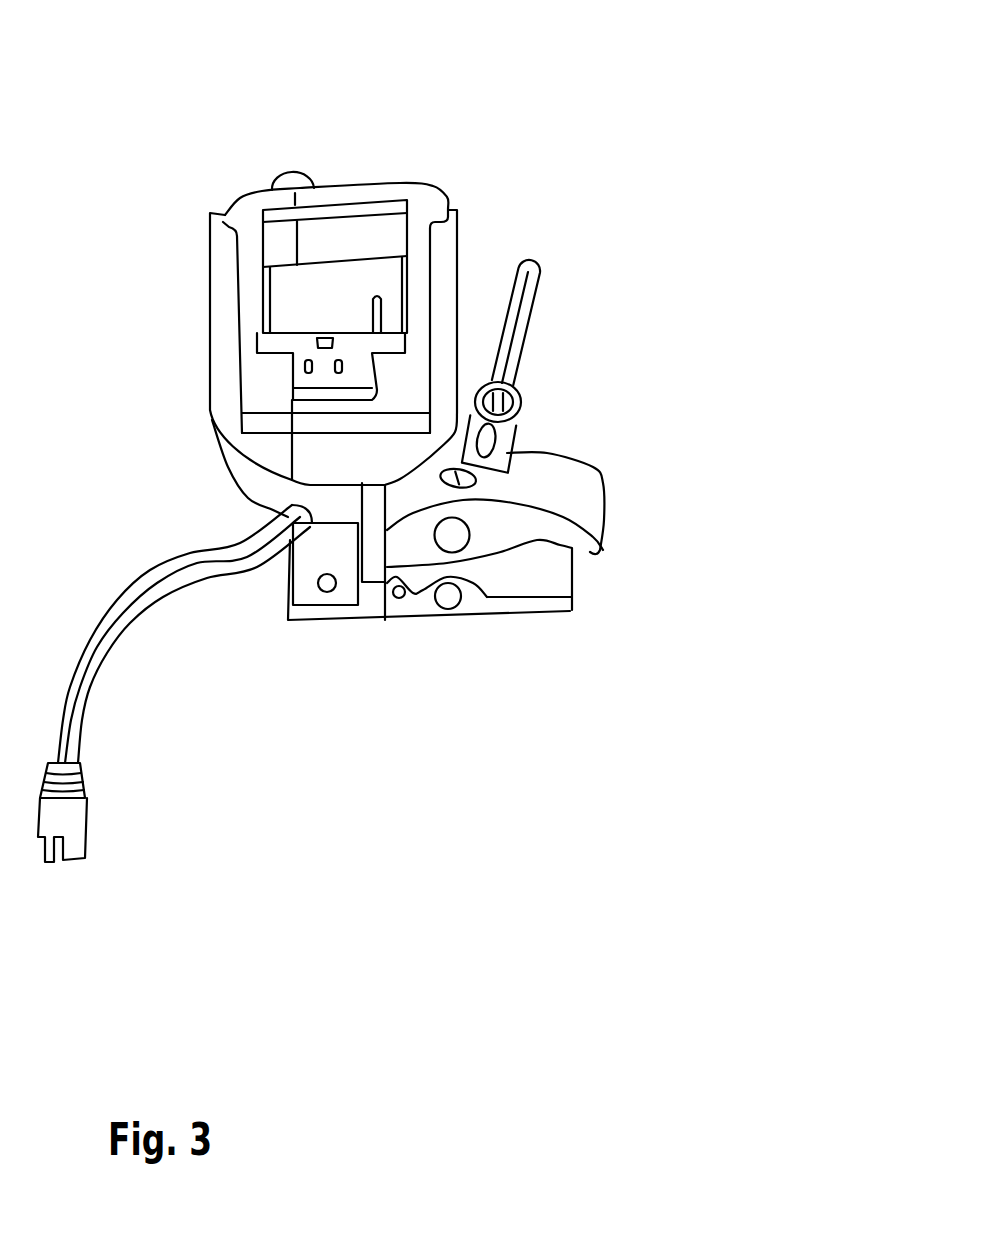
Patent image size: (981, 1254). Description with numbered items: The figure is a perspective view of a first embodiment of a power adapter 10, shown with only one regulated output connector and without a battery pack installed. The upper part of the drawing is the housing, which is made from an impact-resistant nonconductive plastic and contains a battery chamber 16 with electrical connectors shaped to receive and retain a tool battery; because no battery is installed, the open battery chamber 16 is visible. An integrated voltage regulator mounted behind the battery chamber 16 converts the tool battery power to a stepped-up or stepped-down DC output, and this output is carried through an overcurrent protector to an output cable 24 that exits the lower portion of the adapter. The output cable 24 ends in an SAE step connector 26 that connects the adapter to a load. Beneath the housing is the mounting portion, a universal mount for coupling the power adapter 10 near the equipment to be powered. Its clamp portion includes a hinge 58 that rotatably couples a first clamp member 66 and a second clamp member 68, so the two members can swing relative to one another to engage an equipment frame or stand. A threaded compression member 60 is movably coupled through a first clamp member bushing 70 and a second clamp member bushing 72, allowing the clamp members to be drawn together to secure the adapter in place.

The power adapter 10 is at (458, 150).
The battery chamber 16 is at (328, 280).
The output cable 24 is at (130, 615).
The SAE step connector 26 is at (85, 852).
The hinge 58 is at (398, 598).
The threaded compression member 60 is at (518, 393).
The first clamp member 66 is at (628, 458).
The second clamp member 68 is at (573, 599).
The first clamp member bushing 70 is at (458, 539).
The second clamp member bushing 72 is at (450, 601).